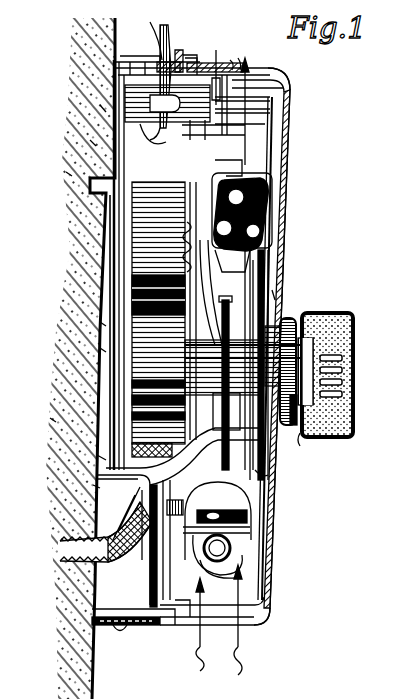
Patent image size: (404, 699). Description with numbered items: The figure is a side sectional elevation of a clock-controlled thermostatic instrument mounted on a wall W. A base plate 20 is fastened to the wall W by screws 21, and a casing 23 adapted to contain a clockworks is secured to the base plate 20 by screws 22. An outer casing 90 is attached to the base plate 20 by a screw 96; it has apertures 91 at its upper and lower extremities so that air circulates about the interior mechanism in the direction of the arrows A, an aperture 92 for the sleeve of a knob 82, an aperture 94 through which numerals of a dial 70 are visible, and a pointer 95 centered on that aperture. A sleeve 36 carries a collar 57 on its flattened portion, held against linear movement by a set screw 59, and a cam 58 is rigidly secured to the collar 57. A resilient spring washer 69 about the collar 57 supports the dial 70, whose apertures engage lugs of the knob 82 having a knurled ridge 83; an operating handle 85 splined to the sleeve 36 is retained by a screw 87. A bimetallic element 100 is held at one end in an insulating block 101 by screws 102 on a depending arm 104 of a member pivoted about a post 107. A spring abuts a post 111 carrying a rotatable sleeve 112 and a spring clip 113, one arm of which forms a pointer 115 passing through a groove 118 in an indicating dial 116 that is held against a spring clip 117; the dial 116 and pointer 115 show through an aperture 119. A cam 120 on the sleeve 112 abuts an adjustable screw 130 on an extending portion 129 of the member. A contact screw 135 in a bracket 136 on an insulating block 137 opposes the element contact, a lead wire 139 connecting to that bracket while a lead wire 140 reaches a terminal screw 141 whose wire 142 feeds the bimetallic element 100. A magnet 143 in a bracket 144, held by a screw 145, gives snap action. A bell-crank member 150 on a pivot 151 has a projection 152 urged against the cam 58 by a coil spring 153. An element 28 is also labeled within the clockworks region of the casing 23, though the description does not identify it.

The wall W is at (72, 240).
The base plate 20 is at (97, 110).
The screws 21 is at (67, 173).
The screws 22 is at (132, 262).
The casing 23 is at (87, 143).
The spring 28 is at (187, 240).
The sleeve 36 is at (100, 348).
The collar 57 is at (105, 325).
The cam 58 is at (267, 270).
The set screw 59 is at (280, 287).
The spring washer 69 is at (264, 468).
The dial 70 is at (232, 440).
The knob 82 is at (300, 433).
The knurled ridge 83 is at (293, 320).
The operating handle 85 is at (353, 340).
The screw 87 is at (350, 375).
The casing 90 is at (283, 237).
The apertures 91 is at (274, 80).
The aperture 92 is at (327, 353).
The aperture 94 is at (270, 283).
The pointer 95 is at (290, 297).
The screw 96 is at (111, 627).
The bimetallic element 100 is at (267, 133).
The insulating block 101 is at (258, 173).
The screws 102 is at (268, 205).
The depending arm 104 is at (198, 197).
The post 107 is at (238, 58).
The post 111 is at (155, 57).
The sleeve 112 is at (198, 72).
The spring clip 113 is at (163, 123).
The pointer 115 is at (180, 27).
The indicating dial 116 is at (167, 25).
The spring clip 117 is at (230, 60).
The groove 118 is at (158, 22).
The aperture 119 is at (187, 58).
The cam 120 is at (216, 72).
The extending portion 129 is at (163, 143).
The adjustable screw 130 is at (239, 155).
The contact screw 135 is at (242, 560).
The bracket 136 is at (233, 570).
The insulating block 137 is at (163, 620).
The lead wire 139 is at (126, 514).
The lead wire 140 is at (132, 564).
The terminal screw 141 is at (187, 627).
The wire 142 is at (263, 260).
The magnet 143 is at (240, 510).
The bracket 144 is at (247, 525).
The screw 145 is at (230, 548).
The bell-crank member 150 is at (250, 493).
The pivot 151 is at (100, 457).
The projection 152 is at (268, 475).
The coil spring 153 is at (93, 487).
The arrows A is at (235, 360).